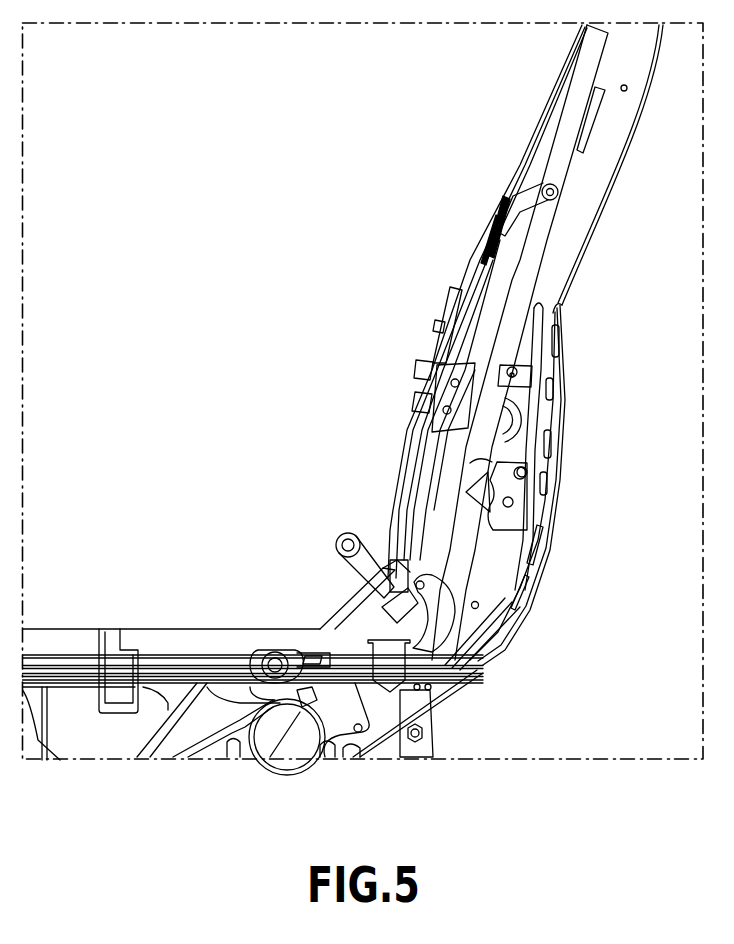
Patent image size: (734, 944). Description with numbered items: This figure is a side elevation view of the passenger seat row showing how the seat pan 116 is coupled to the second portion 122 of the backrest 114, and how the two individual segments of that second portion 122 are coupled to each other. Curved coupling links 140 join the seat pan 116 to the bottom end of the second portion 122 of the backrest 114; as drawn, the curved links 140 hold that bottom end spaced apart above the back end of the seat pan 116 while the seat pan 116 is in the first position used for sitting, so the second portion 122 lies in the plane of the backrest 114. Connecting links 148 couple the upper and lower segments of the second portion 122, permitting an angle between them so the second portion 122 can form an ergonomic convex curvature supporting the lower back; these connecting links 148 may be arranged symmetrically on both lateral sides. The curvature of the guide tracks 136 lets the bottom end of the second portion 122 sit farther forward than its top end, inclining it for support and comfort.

The backrest 114 is at (575, 207).
The guide tracks 136 is at (515, 305).
The connecting links 148 is at (432, 375).
The second portion 122 is at (426, 410).
The seat pan 116 is at (60, 642).
The curved coupling links 140 is at (497, 653).